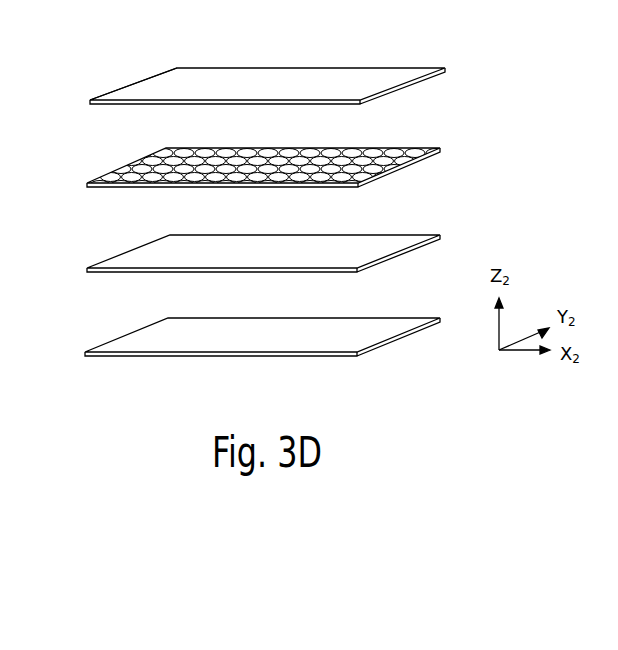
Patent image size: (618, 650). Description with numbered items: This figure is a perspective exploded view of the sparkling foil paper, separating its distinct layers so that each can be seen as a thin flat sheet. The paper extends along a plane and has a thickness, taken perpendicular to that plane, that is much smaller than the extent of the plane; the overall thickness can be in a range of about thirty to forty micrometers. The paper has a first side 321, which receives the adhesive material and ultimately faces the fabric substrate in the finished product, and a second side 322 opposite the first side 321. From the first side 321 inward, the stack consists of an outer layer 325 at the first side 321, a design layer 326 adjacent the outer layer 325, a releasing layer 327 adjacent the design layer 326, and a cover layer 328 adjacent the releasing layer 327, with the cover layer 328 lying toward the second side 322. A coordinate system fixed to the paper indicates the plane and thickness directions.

The first side 321 is at (172, 64).
The second side 322 is at (175, 377).
The outer layer 325 is at (102, 91).
The design layer 326 is at (102, 173).
The releasing layer 327 is at (102, 255).
The cover layer 328 is at (102, 337).